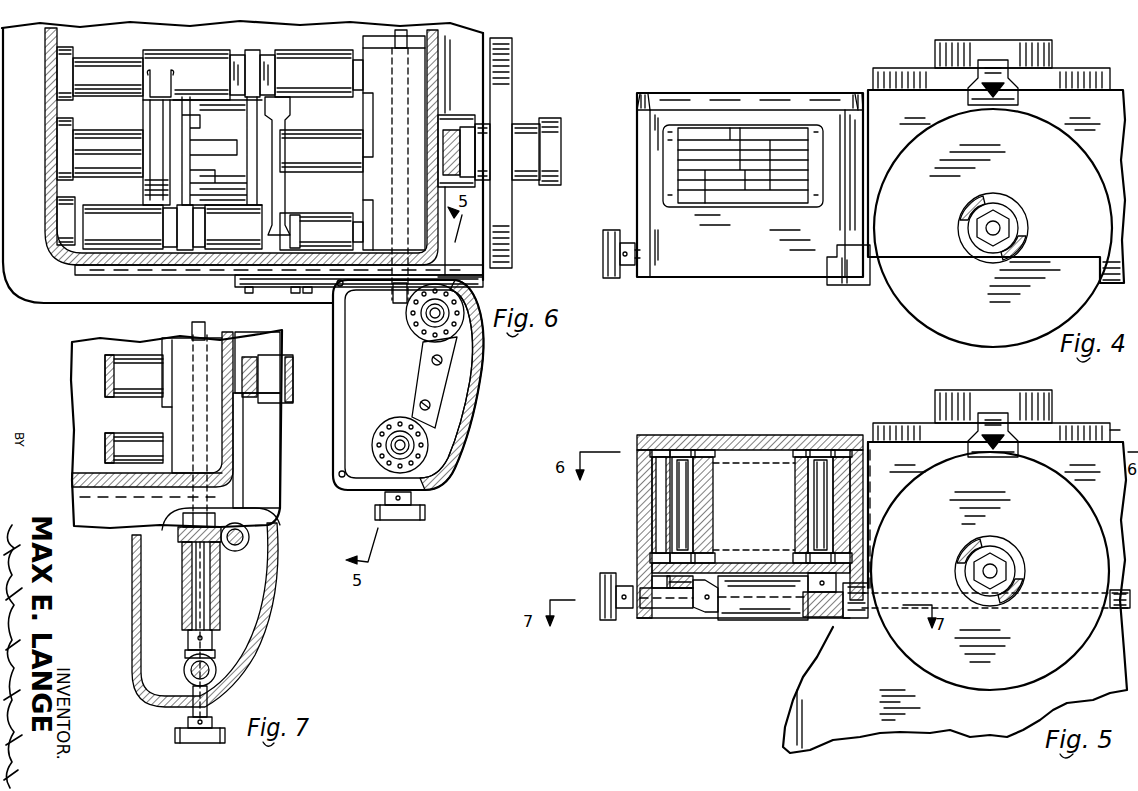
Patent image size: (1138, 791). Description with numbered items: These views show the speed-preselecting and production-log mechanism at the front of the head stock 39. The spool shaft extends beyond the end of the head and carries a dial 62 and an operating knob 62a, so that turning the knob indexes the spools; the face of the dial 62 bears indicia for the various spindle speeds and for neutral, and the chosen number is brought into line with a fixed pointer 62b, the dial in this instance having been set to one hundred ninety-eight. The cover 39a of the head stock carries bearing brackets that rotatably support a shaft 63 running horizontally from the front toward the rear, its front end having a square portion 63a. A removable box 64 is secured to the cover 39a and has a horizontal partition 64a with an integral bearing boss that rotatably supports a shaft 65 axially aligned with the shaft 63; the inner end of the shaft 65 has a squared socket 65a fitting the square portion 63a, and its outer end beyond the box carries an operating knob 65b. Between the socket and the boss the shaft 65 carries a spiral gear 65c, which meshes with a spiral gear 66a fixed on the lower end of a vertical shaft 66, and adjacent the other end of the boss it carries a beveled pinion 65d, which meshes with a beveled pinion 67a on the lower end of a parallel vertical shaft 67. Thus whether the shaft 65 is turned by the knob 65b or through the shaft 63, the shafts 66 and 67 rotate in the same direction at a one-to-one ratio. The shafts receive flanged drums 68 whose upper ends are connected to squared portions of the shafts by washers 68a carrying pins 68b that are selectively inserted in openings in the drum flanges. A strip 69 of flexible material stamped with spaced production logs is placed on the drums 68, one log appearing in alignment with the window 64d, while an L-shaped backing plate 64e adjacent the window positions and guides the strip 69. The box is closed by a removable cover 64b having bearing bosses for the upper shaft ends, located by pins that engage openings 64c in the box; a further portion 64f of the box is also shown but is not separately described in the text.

In FIG. 5, the headstock housing 39 is at (797, 710).
In FIG. 6, the cover 39a is at (50, 292).
In FIG. 7, the cover 39a is at (70, 406).
In FIG. 4, the cover 39a is at (866, 274).
In FIG. 5, the cover 39a is at (1108, 458).
In FIG. 6, the dial 62 is at (510, 76).
In FIG. 4, the dial 62 is at (1022, 134).
In FIG. 5, the dial 62 is at (1050, 661).
In FIG. 6, the operating knob 62a is at (548, 120).
In FIG. 4, the operating knob 62a is at (1023, 219).
In FIG. 5, the operating knob 62a is at (1012, 548).
In FIG. 6, the fixed pointer 62b is at (450, 130).
In FIG. 4, the fixed pointer 62b is at (995, 62).
In FIG. 5, the fixed pointer 62b is at (995, 416).
In FIG. 6, the shaft 63 is at (393, 40).
In FIG. 7, the shaft 63 is at (191, 323).
In FIG. 5, the shaft 63 is at (1032, 597).
In FIG. 6, the square portion 63a is at (392, 312).
In FIG. 6, the removable box 64 is at (342, 402).
In FIG. 4, the removable box 64 is at (735, 266).
In FIG. 5, the removable box 64 is at (640, 492).
In FIG. 5, the horizontal partition 64a is at (720, 565).
In FIG. 4, the removable cover 64b is at (735, 98).
In FIG. 6, the openings 64c is at (338, 286).
In FIG. 4, the openings 64c is at (665, 100).
In FIG. 6, the window 64d is at (452, 412).
In FIG. 4, the window 64d is at (745, 204).
In FIG. 6, the L-shaped backing plate 64e is at (340, 477).
In FIG. 4, the L-shaped backing plate 64e is at (845, 100).
In FIG. 6, the cover plate 64f is at (452, 375).
In FIG. 5, the cover plate 64f is at (755, 443).
In FIG. 7, the shaft 65 is at (200, 600).
In FIG. 5, the shaft 65 is at (676, 610).
In FIG. 7, the squared socket 65a is at (218, 515).
In FIG. 5, the squared socket 65a is at (702, 613).
In FIG. 6, the operating knob 65b is at (426, 509).
In FIG. 7, the operating knob 65b is at (180, 733).
In FIG. 4, the operating knob 65b is at (605, 266).
In FIG. 5, the operating knob 65b is at (605, 573).
In FIG. 7, the spiral gear 65c is at (178, 536).
In FIG. 5, the spiral gear 65c is at (816, 621).
In FIG. 7, the beveled pinion 65d is at (188, 654).
In FIG. 5, the vertically extending shaft 66 is at (822, 530).
In FIG. 7, the spiral gear 66a is at (250, 538).
In FIG. 5, the spiral gear 66a is at (808, 608).
In FIG. 5, the vertically extending shaft 67 is at (682, 478).
In FIG. 7, the beveled pinion 67a is at (217, 672).
In FIG. 5, the beveled pinion 67a is at (688, 586).
In FIG. 5, the flanged drums 68 is at (800, 505).
In FIG. 5, the washers 68a is at (700, 455).
In FIG. 5, the pins 68b is at (653, 458).
In FIG. 6, the strip 69 is at (426, 440).